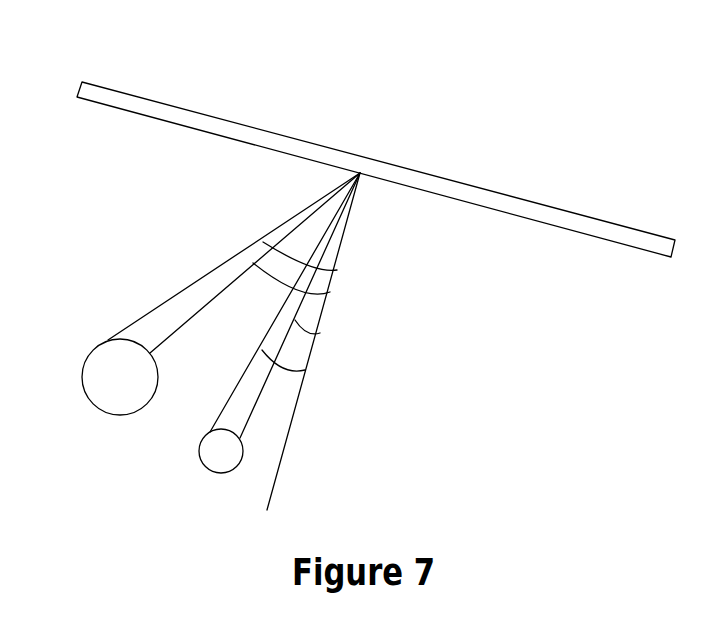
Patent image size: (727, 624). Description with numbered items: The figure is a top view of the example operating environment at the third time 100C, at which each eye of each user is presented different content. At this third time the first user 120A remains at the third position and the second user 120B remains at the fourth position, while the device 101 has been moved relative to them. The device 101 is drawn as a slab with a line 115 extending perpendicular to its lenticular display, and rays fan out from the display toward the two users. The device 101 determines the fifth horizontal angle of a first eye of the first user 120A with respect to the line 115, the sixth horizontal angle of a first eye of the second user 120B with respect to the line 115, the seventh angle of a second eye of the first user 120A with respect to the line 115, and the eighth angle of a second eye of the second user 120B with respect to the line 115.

The third time 100C is at (147, 56).
The device 101 is at (78, 84).
The first user 120A is at (97, 345).
The second user 120B is at (228, 473).
The line perpendicular to the lenticular display 115 is at (289, 435).